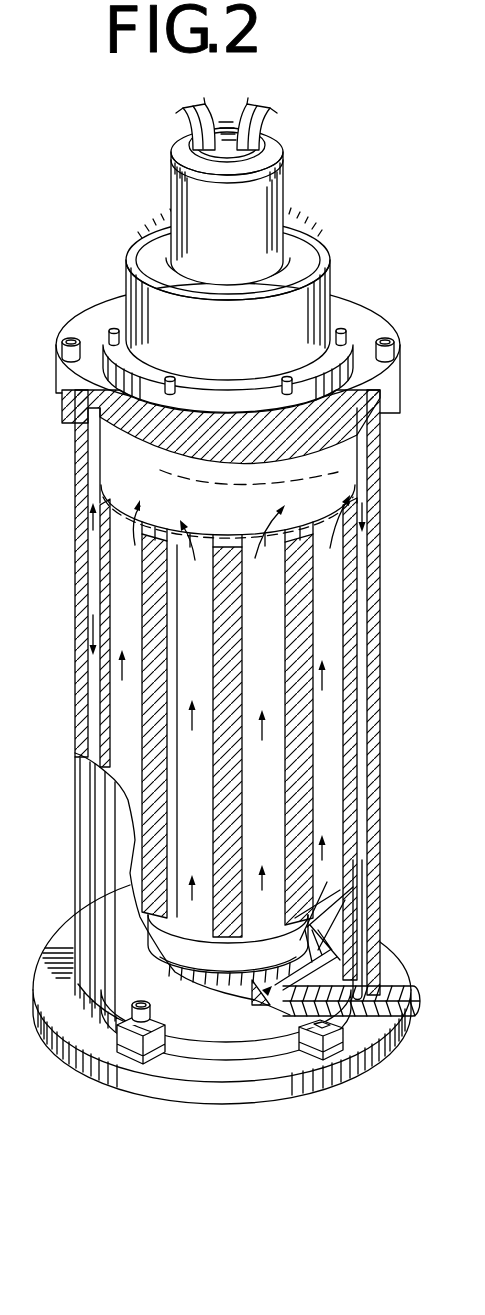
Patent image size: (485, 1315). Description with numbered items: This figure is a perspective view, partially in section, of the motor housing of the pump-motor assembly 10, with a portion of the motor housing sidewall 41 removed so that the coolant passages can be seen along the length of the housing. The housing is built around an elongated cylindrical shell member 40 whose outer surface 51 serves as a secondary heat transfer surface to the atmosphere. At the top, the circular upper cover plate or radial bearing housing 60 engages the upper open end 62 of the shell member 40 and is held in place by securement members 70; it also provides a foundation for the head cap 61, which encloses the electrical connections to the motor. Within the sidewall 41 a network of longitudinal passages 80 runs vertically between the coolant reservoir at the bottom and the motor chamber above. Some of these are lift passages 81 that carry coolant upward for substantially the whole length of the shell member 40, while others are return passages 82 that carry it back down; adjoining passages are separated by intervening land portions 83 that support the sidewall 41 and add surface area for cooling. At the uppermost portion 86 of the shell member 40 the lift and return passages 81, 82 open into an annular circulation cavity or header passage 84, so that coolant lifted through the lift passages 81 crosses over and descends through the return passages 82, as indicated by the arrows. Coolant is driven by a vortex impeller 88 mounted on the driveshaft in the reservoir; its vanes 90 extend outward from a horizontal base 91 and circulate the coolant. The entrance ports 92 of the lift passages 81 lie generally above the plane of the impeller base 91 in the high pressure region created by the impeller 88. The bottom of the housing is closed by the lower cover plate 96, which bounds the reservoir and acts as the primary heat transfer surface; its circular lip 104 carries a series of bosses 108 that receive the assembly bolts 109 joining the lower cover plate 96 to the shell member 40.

The pump-motor assembly 10 is at (473, 1195).
The cylindrical shell member 40 is at (83, 527).
The motor housing sidewall 41 is at (75, 552).
The outer surface of the shell member 51 is at (381, 517).
The upper cover plate or radial bearing housing 60 is at (227, 310).
The head cap 61 is at (270, 203).
The upper open end 62 is at (100, 430).
The securement members 70 is at (68, 338).
The longitudinal passages 80 is at (40, 770).
The lift passages 81 is at (183, 605).
The return passages 82 is at (92, 633).
The land portions 83 is at (302, 628).
The annular circulation cavity or header passage 84 is at (363, 455).
The uppermost portion of the shell member 86 is at (85, 470).
The impeller 88 is at (305, 938).
The vanes 90 is at (223, 987).
The horizontal base 91 is at (237, 969).
The entrance ports 92 is at (327, 882).
The lower cover plate 96 is at (63, 937).
The circular lip 104 is at (300, 1097).
The bosses 108 is at (140, 1060).
The assembly bolts 109 is at (117, 1036).